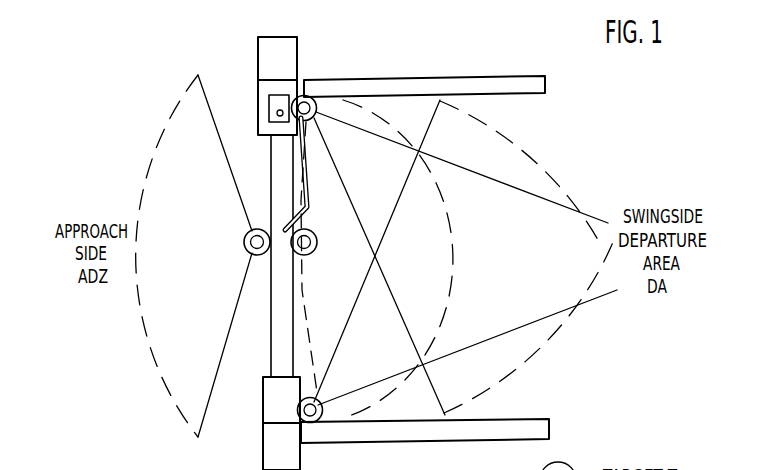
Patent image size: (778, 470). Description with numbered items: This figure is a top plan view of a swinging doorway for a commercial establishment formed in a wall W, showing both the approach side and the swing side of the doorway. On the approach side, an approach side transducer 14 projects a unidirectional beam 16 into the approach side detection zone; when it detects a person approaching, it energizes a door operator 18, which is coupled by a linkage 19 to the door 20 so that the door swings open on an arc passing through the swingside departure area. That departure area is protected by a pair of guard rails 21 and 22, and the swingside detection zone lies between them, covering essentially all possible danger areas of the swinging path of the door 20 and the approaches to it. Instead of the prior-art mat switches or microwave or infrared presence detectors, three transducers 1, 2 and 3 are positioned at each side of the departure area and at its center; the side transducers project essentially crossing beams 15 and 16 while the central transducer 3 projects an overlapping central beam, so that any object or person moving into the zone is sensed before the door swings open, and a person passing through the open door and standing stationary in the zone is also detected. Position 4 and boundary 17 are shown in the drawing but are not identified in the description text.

The wall W is at (283, 48).
The door operator 18 is at (268, 100).
The transducer 1 is at (312, 97).
The transducer 2 is at (320, 398).
The transducer 3 is at (318, 242).
The ultrasonic sensor position #4 (approach side) 4 is at (244, 241).
The approach side transducer 14 is at (250, 256).
The crossing beam 15 is at (506, 150).
The beam 16 is at (528, 344).
The approach side detection zone boundary 17 is at (162, 346).
The linkage 19 is at (307, 192).
The door 20 is at (284, 334).
The guard rail 21 is at (485, 67).
The guard rail 22 is at (405, 437).